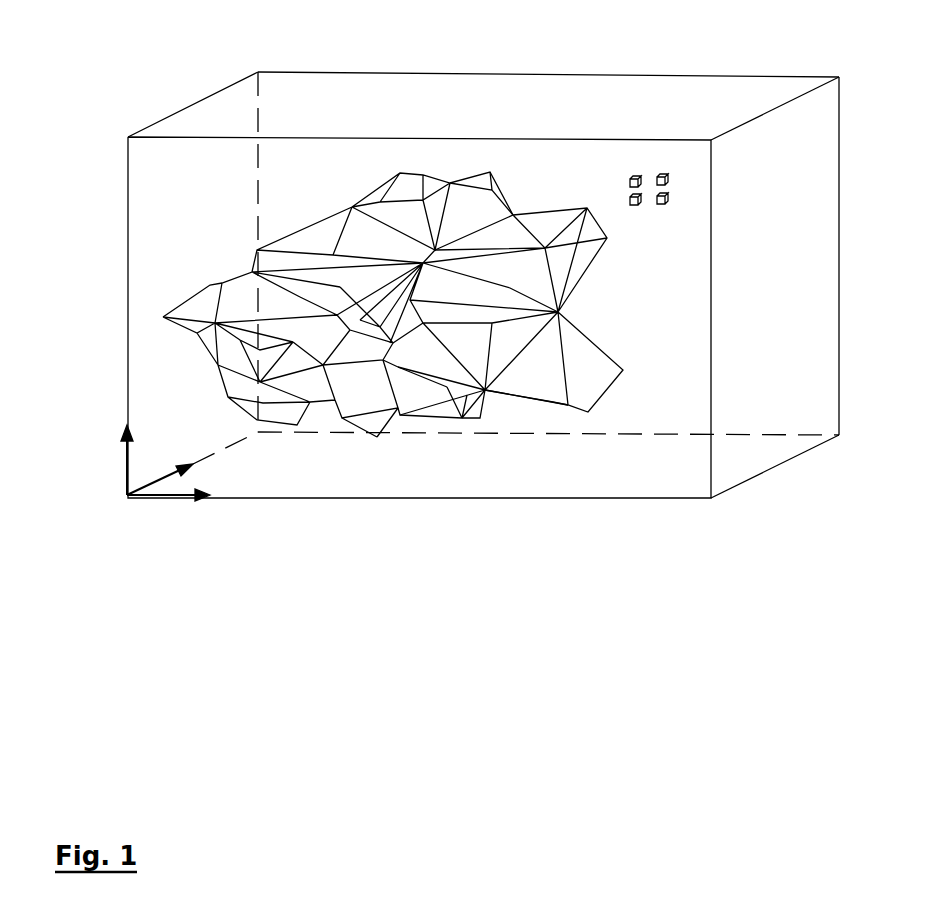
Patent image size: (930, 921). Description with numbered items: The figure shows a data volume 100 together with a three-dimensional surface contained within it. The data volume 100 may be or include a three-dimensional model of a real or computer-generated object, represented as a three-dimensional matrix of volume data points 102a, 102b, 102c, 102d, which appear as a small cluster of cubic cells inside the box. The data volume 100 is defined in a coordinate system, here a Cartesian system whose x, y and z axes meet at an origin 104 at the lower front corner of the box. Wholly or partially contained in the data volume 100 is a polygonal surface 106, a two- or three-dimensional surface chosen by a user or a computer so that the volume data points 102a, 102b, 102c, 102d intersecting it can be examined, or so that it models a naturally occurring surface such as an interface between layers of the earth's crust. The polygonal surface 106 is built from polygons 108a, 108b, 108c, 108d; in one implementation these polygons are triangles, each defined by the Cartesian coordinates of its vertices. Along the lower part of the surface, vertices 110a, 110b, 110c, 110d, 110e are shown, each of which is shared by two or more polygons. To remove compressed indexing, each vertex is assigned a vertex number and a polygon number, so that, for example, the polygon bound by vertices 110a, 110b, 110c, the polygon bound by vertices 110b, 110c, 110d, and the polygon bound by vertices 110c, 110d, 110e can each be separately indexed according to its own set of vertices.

The data volume 100 is at (180, 108).
The volume data point 102a is at (633, 176).
The volume data point 102b is at (668, 174).
The volume data point 102c is at (668, 204).
The volume data point 102d is at (640, 207).
The origin 104 is at (128, 497).
The polygonal surface 106 is at (625, 372).
The polygon 108a is at (290, 232).
The polygon 108b is at (370, 185).
The polygon 108c is at (418, 208).
The polygon 108d is at (513, 215).
The vertex 110a is at (398, 408).
The vertex 110b is at (467, 395).
The vertex 110c is at (452, 432).
The vertex 110d is at (480, 418).
The vertex 110e is at (553, 402).